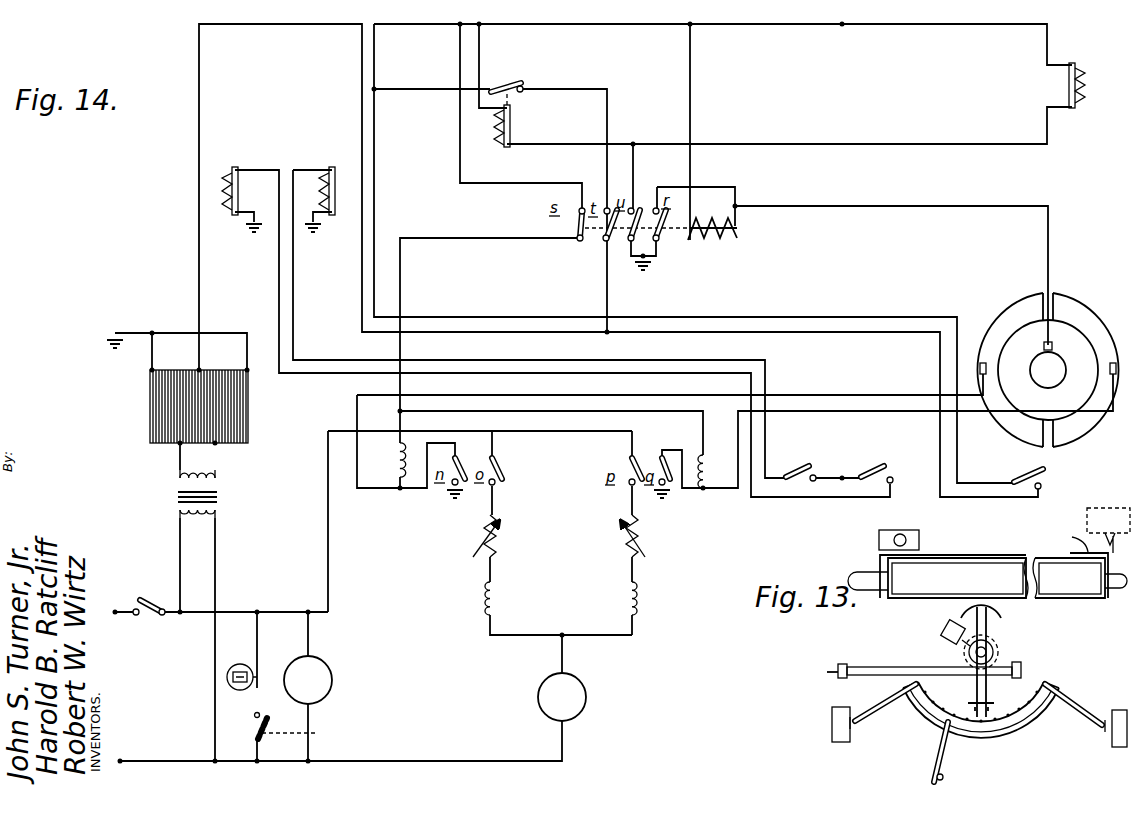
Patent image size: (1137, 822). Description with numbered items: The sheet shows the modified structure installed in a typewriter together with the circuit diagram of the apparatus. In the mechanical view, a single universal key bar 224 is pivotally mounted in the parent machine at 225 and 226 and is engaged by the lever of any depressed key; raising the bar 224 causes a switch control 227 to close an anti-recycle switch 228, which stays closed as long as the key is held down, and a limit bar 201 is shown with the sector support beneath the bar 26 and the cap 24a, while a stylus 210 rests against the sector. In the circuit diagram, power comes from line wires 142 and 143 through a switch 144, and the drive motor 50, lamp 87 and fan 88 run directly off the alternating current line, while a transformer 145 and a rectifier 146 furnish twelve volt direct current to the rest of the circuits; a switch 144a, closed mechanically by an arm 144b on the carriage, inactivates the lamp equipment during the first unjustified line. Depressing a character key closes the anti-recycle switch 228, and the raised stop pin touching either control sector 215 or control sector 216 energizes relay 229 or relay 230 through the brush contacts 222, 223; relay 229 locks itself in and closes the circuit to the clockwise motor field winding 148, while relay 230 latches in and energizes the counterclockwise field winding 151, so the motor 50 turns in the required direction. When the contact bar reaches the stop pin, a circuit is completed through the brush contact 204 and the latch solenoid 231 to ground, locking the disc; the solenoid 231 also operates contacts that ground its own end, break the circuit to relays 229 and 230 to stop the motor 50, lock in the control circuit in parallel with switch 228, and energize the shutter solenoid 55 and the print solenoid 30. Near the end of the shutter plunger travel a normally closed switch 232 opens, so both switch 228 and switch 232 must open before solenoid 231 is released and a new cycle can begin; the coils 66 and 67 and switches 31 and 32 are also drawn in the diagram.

In FIG. 14, the print solenoid 30 is at (1080, 85).
In FIG. 13, the print solenoid 30 is at (906, 540).
In FIG. 14, the photocomposer shutter solenoid 55 is at (516, 126).
In FIG. 14, the relay coil 66 is at (228, 190).
In FIG. 14, the relay coil 67 is at (338, 200).
In FIG. 14, the lamp 87 is at (236, 696).
In FIG. 14, the fan 88 is at (327, 694).
In FIG. 14, the drive motor 50 is at (590, 694).
In FIG. 14, the line wire 142 is at (160, 759).
In FIG. 14, the line wire 143 is at (126, 606).
In FIG. 14, the switch 144 is at (146, 618).
In FIG. 14, the switch 144a is at (305, 732).
In FIG. 13, the switch 144a is at (1122, 500).
In FIG. 13, the arm 144b is at (1055, 540).
In FIG. 14, the transformer 145 is at (220, 497).
In FIG. 14, the rectifier 146 is at (250, 412).
In FIG. 14, the clockwise motor field winding 148 is at (483, 606).
In FIG. 14, the counterclockwise field winding 151 is at (641, 602).
In FIG. 14, the relay 229 is at (406, 470).
In FIG. 14, the relay 230 is at (707, 488).
In FIG. 14, the latch solenoid 231 is at (738, 235).
In FIG. 14, the normally closed switch 232 is at (509, 80).
In FIG. 14, the switch 31 is at (802, 464).
In FIG. 14, the switch 32 is at (878, 465).
In FIG. 14, the brush contact 204 is at (1040, 352).
In FIG. 14, the control sector 215 is at (1027, 436).
In FIG. 14, the control sector 216 is at (1087, 428).
In FIG. 14, the brush contact 222 is at (983, 362).
In FIG. 13, the brush contact 222 is at (945, 630).
In FIG. 14, the brush contact 223 is at (1112, 362).
In FIG. 14, the anti-recycle switch 228 is at (1046, 474).
In FIG. 13, the anti-recycle switch 228 is at (840, 744).
In FIG. 13, the bar 26 is at (987, 575).
In FIG. 13, the cap 24a is at (1001, 616).
In FIG. 13, the limit bar 201 is at (990, 696).
In FIG. 13, the stylus 210 is at (951, 734).
In FIG. 13, the universal key bar 224 is at (1003, 724).
In FIG. 13, the pivot mounting 225 is at (935, 665).
In FIG. 13, the pivot mounting 226 is at (1022, 666).
In FIG. 13, the switch control 227 is at (858, 726).